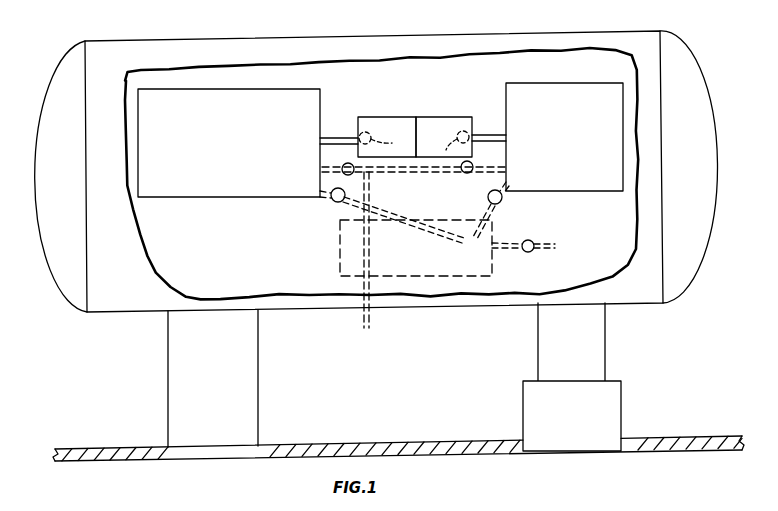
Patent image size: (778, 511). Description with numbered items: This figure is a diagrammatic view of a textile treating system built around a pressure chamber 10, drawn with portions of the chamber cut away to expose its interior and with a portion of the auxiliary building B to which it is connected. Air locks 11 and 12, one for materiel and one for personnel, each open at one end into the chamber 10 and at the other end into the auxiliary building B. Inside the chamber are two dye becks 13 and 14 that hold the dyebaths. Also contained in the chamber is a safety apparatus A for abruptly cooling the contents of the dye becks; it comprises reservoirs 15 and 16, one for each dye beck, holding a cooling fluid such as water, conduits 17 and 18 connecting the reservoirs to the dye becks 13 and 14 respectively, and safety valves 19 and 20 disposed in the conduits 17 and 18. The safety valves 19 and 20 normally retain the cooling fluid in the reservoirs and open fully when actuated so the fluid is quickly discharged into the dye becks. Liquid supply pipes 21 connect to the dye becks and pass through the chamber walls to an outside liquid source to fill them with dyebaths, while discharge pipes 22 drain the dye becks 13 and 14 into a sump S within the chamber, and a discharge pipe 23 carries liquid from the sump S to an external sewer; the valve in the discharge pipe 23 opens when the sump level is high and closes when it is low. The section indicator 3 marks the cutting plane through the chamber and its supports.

The pressure chamber 10 is at (360, 36).
The air lock 11 is at (254, 373).
The air lock 12 is at (598, 348).
The dye beck 13 is at (218, 197).
The dye beck 14 is at (587, 191).
The reservoir 15 is at (393, 117).
The reservoir 16 is at (463, 117).
The conduit 17 is at (345, 138).
The conduit 18 is at (502, 135).
The safety valve 19 is at (383, 139).
The safety valve 20 is at (448, 139).
The liquid supply pipes 21 is at (402, 173).
The discharge pipes 22 is at (418, 219).
The discharge pipe 23 is at (514, 241).
The sump S is at (340, 252).
The safety apparatus A is at (420, 110).
The auxiliary building B is at (411, 443).
The section line 3- 3 is at (232, 288).